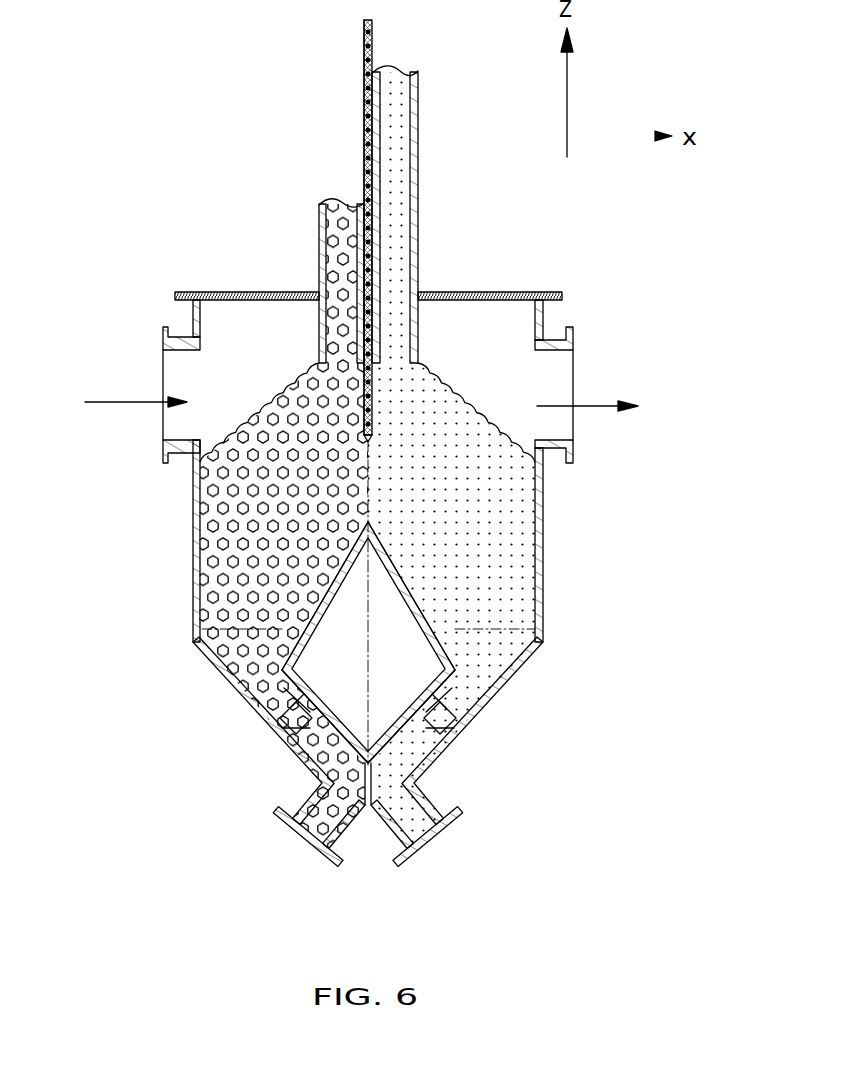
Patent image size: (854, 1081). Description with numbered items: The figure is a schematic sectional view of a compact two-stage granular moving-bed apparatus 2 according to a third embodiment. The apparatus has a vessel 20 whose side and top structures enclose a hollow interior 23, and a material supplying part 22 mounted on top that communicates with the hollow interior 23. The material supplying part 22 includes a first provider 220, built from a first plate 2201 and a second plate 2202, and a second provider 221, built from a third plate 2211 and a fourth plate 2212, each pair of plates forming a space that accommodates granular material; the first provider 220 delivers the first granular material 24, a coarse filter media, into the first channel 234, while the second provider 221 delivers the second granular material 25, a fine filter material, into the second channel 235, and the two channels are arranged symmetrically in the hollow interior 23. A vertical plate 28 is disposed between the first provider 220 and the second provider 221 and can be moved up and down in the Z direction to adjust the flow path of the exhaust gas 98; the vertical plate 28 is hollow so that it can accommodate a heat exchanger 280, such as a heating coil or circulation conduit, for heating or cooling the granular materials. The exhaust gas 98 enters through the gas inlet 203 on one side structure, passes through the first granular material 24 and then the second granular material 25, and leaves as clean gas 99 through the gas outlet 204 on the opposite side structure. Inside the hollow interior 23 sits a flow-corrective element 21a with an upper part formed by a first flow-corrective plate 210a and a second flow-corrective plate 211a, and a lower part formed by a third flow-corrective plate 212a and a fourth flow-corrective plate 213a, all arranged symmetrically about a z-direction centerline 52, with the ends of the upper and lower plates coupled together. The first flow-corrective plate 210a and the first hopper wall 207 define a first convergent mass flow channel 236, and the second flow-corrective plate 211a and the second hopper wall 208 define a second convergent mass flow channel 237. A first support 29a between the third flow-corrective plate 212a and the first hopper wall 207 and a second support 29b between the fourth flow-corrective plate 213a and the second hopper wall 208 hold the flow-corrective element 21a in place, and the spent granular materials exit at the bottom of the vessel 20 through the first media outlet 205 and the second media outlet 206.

The compact two-stage granular moving-bed apparatus 2 is at (205, 82).
The vessel 20 is at (175, 522).
The material supplying part 22 is at (300, 186).
The first provider 220 is at (240, 245).
The first plate 2201 is at (322, 228).
The second plate 2202 is at (353, 250).
The second provider 221 is at (505, 150).
The third plate 2211 is at (412, 173).
The fourth plate 2212 is at (376, 208).
The vertical plate 28 is at (363, 120).
The heat exchanger 280 is at (364, 80).
The hollow interior 23 is at (498, 344).
The gas inlet 203 is at (168, 362).
The gas outlet 204 is at (566, 360).
The exhaust gas 98 is at (128, 398).
The outlet flow 99 is at (563, 405).
The first channel 234 is at (296, 504).
The second channel 235 is at (458, 499).
The first granular material 24 is at (208, 562).
The second granular material 25 is at (513, 549).
The flow-corrective element 21a is at (408, 556).
The first flow-corrective plate 210a is at (317, 597).
The second flow-corrective plate 211a is at (417, 595).
The third flow-corrective plate 212a is at (303, 696).
The fourth flow-corrective plate 213a is at (420, 697).
The z-direction centerline 52 is at (371, 636).
The first convergent mass flow channel 236 is at (196, 648).
The second convergent mass flow channel 237 is at (538, 648).
The first hopper wall 207 is at (222, 672).
The second hopper wall 208 is at (500, 697).
The first support 29a is at (290, 716).
The second support 29b is at (458, 716).
The first media outlet 205 is at (312, 832).
The second media outlet 206 is at (418, 828).